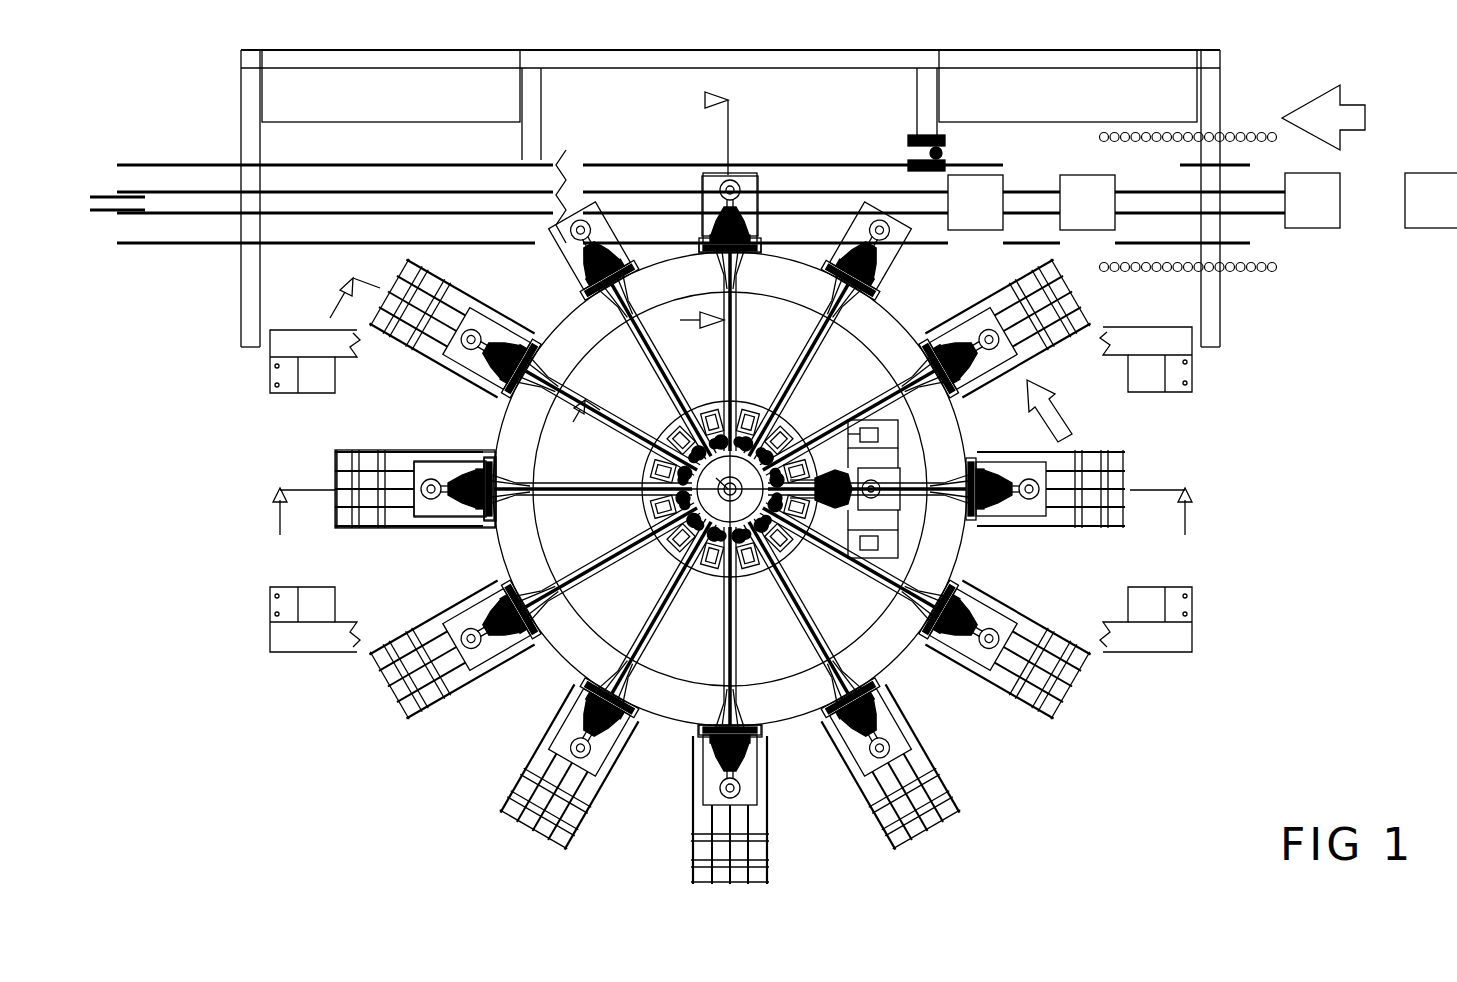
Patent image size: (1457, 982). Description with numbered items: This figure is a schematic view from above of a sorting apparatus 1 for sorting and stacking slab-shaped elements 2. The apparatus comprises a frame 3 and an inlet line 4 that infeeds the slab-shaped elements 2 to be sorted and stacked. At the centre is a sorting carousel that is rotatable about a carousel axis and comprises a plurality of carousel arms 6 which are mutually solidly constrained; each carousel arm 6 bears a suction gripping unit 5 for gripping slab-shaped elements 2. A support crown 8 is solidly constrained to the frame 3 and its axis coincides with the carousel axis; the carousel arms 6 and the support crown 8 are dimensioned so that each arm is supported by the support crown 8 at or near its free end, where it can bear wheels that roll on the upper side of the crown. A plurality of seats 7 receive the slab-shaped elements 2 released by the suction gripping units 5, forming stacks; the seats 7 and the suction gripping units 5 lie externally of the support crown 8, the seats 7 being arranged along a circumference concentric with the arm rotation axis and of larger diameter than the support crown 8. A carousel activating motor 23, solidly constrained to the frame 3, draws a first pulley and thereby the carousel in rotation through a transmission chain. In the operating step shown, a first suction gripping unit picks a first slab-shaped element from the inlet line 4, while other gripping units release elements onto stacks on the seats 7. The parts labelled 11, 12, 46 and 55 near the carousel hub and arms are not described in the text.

The sorting apparatus 1 is at (1290, 420).
The slab-shaped elements 2 is at (1312, 232).
The frame 3 is at (268, 392).
The inlet line 4 is at (828, 168).
The suction gripping unit 5 is at (665, 745).
The carousel arm 6 is at (640, 582).
The seats 7 is at (778, 846).
The support crown 8 is at (560, 655).
The upper spoke 11 is at (1083, 537).
The lower spoke 12 is at (920, 625).
The carousel activating motor 23 is at (905, 458).
The guide block 46 is at (748, 400).
The rail unit 55 is at (1068, 346).